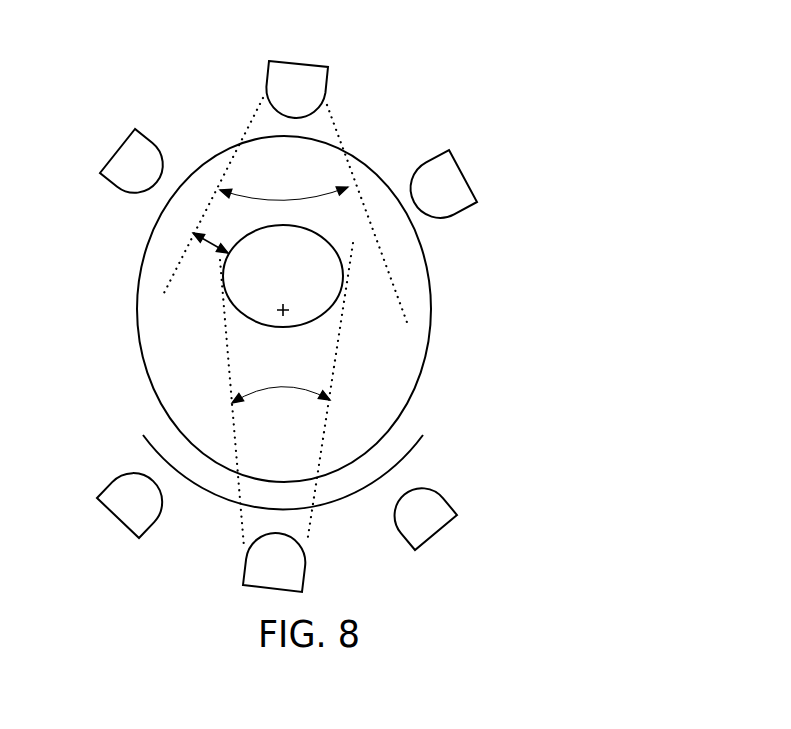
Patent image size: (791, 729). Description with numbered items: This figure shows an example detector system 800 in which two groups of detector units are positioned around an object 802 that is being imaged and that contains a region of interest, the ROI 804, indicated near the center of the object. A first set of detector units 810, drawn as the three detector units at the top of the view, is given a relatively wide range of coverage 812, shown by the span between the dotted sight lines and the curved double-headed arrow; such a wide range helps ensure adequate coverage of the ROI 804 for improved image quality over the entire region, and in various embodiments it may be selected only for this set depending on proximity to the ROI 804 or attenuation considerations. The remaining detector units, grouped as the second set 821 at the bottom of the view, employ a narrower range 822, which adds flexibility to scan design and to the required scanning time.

The detector system 800 is at (575, 57).
The object 802 is at (430, 310).
The ROI 804 is at (298, 289).
The first set of detector units 810 is at (493, 55).
The wide range of coverage 812 is at (288, 200).
The second set of illumination sources 821 is at (520, 422).
The narrower range 822 is at (281, 387).